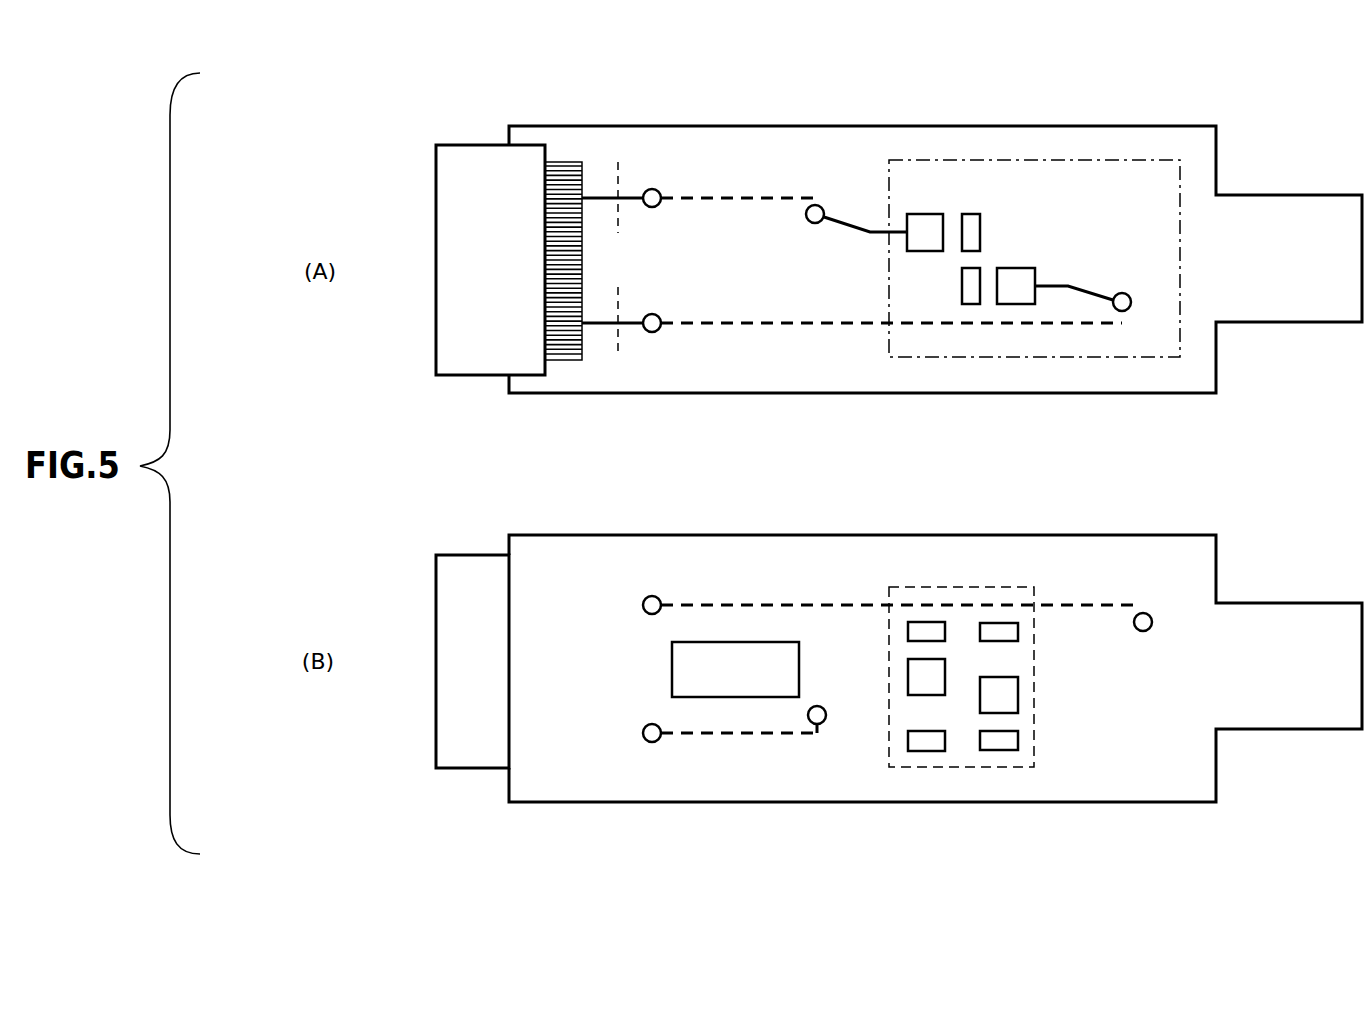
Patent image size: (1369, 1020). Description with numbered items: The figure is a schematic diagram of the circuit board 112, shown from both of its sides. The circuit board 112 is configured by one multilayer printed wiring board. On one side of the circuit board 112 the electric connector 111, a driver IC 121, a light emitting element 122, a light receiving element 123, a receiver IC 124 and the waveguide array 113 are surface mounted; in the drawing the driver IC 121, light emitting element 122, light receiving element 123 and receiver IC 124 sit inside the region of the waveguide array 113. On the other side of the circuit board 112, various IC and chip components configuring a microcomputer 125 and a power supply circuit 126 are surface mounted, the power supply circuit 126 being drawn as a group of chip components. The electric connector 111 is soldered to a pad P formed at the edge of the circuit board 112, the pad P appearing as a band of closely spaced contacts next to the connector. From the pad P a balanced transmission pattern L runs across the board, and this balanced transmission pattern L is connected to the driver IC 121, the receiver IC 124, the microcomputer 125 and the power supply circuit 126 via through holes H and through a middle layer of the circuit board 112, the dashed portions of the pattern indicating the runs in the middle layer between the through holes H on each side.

The electric connector 111 is at (434, 376).
The circuit board 112 is at (507, 394).
The waveguide array 113 is at (1180, 357).
The driver IC 121 is at (907, 214).
The light emitting element 122 is at (980, 214).
The light receiving element 123 is at (962, 304).
The receiver IC 124 is at (1035, 304).
The microcomputer 125 is at (727, 641).
The power supply circuit 126 is at (962, 587).
The pad P is at (582, 358).
The through holes H is at (809, 207).
The balanced transmission pattern L is at (615, 190).